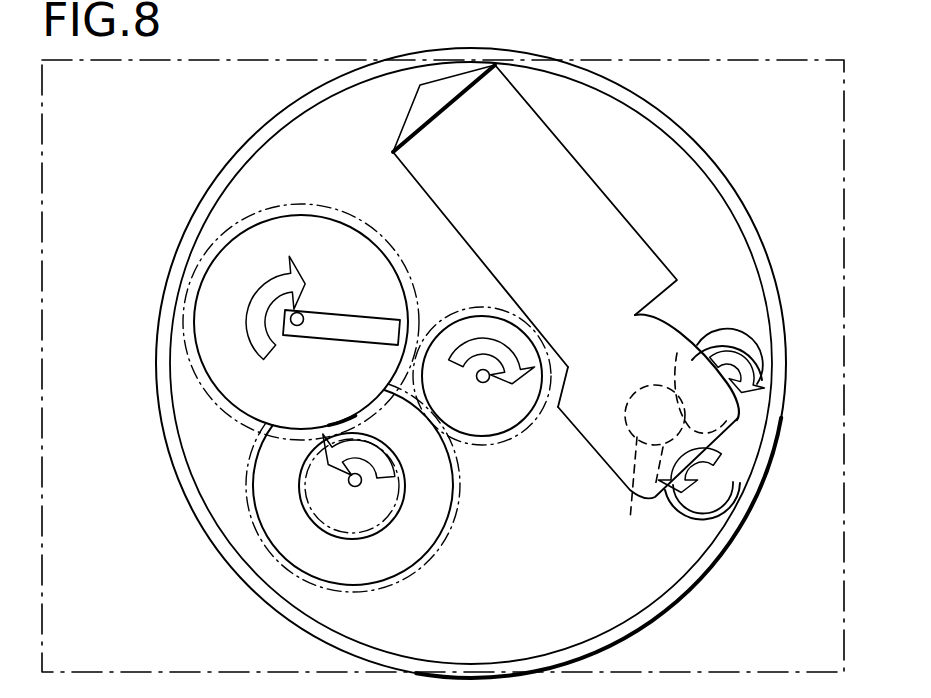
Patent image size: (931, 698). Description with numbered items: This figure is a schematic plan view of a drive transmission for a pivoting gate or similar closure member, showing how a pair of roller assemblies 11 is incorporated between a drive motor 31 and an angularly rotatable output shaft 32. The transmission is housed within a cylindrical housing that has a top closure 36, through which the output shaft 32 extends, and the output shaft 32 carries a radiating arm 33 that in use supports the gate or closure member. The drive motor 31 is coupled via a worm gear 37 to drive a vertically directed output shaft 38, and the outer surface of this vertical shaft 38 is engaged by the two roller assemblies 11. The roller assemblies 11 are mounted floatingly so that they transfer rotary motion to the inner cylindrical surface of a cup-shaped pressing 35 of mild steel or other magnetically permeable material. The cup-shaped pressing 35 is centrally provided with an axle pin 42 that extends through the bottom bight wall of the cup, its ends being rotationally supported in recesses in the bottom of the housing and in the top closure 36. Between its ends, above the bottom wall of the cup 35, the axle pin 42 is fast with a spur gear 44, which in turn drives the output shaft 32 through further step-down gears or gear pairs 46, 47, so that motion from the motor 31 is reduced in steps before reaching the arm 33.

The top closure 36 is at (163, 62).
The cup-shaped pressing 35 is at (764, 250).
The drive motor 31 is at (532, 145).
The worm gear 37 is at (578, 405).
The step-down gear 47 is at (275, 228).
The output shaft 32 is at (297, 313).
The radiating arm 33 is at (333, 322).
The spur gear 44 is at (462, 328).
The axle pin 42 is at (484, 383).
The step-down gear 46 is at (355, 565).
The vertically directed output shaft 38 is at (669, 455).
The roller assemblies 11 is at (733, 340).